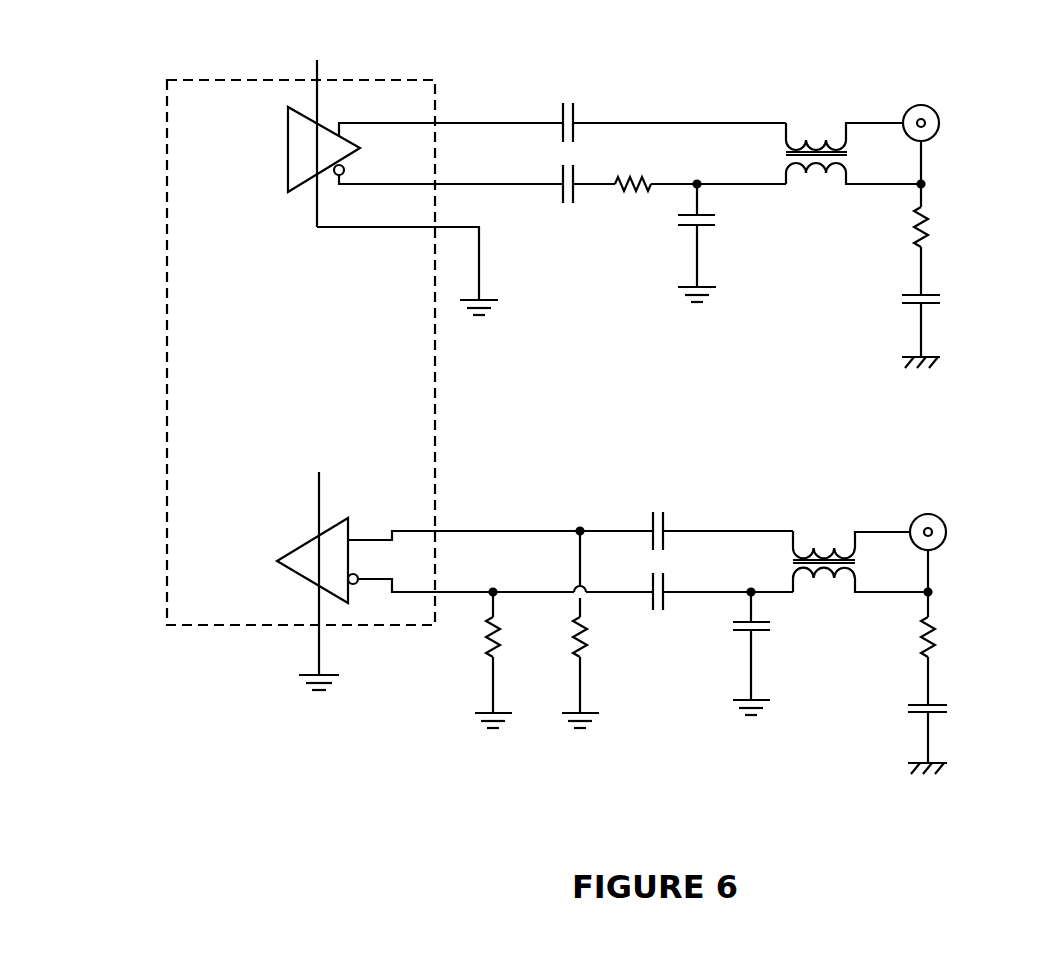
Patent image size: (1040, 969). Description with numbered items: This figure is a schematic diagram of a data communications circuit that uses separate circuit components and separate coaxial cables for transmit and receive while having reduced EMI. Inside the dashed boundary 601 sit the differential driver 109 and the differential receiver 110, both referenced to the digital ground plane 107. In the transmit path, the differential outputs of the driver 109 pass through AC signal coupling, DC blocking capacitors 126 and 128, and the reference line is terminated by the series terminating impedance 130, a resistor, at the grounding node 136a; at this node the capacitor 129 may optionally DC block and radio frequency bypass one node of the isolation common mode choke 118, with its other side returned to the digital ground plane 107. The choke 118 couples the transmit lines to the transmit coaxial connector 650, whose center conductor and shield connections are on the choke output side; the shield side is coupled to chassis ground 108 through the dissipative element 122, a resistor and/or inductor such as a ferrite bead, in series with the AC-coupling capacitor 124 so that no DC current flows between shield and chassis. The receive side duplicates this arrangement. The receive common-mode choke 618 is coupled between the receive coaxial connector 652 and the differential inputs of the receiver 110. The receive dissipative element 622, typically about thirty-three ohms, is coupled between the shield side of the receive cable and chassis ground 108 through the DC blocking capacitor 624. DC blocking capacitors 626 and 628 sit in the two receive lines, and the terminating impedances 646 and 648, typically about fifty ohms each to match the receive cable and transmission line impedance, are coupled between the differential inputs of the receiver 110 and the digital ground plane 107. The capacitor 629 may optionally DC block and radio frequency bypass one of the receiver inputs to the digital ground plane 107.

The integrated circuit / chip boundary 601 is at (388, 79).
The differential driver 109 is at (288, 132).
The differential receiver 110 is at (300, 545).
The capacitor 126 is at (573, 111).
The capacitor 128 is at (558, 197).
The series terminating impedance 130 is at (628, 192).
The node 136a is at (700, 182).
The capacitor 129 is at (718, 220).
The common mode choke 118 is at (817, 132).
The TX connector 650 is at (926, 104).
The dissipative element 122 is at (930, 223).
The AC-coupling capacitor 124 is at (932, 294).
The digital ground plane 107 is at (482, 298).
The chassis ground 108 is at (934, 356).
The terminating impedance 646 is at (497, 634).
The terminating impedance 648 is at (573, 630).
The DC blocking capacitor 626 is at (665, 520).
The DC blocking capacitor 628 is at (665, 608).
The capacitor 629 is at (773, 625).
The receive common-mode choke 618 is at (825, 547).
The coaxial connector 652 is at (931, 513).
The receive dissipative element 622 is at (938, 628).
The DC blocking capacitor 624 is at (938, 703).